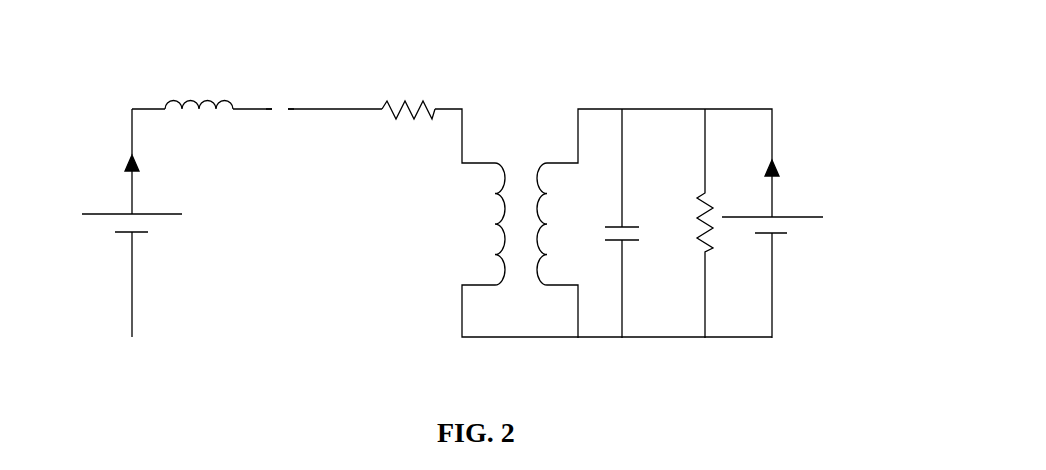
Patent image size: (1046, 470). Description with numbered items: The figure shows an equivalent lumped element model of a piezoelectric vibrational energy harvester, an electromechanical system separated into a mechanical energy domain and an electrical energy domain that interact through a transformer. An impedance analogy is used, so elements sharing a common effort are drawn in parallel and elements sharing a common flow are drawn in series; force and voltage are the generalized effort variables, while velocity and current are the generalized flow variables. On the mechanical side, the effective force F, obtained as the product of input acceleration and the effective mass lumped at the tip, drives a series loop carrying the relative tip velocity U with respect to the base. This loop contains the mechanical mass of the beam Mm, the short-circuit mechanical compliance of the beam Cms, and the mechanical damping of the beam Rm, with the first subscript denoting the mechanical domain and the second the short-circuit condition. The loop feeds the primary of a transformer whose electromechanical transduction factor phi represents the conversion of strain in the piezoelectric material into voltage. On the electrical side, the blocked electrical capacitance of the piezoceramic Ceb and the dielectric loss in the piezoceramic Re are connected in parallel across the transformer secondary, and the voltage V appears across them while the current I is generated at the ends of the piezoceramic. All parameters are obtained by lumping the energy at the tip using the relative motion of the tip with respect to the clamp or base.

The relative tip velocity U is at (122, 184).
The effective force F is at (151, 265).
The mechanical mass of beam Mm is at (188, 97).
The short-circuit mechanical compliance Cms is at (290, 93).
The mechanical damping of beam Rm is at (413, 171).
The electromechanical transduction factor phi is at (500, 169).
The blocked electrical capacitance of the piezoceramic Ceb is at (662, 105).
The dielectric loss in the piezoceramic Re is at (748, 337).
The current I is at (798, 167).
The voltage V is at (797, 258).